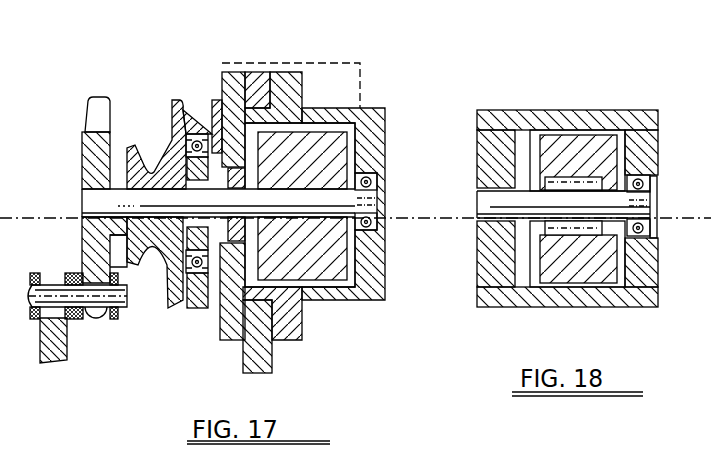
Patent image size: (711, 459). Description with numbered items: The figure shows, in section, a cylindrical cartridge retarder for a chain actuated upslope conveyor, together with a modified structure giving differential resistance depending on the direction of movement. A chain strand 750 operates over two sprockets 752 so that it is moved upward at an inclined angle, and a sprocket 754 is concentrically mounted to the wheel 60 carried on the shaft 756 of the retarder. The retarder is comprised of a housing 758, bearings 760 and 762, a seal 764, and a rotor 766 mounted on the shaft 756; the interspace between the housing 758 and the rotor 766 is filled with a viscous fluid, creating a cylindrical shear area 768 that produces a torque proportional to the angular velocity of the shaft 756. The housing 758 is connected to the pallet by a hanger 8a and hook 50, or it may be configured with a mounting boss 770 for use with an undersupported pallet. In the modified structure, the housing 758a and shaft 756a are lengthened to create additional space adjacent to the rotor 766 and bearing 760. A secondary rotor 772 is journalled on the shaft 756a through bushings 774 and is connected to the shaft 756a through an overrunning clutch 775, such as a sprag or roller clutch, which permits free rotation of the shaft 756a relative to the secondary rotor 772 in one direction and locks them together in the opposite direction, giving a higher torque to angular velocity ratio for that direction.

In FIG. 17, the hanger 8a is at (243, 360).
In FIG. 17, the hook 50 is at (255, 82).
In FIG. 17, the wheel 60 is at (172, 110).
In FIG. 17, the chain strand 750 is at (72, 275).
In FIG. 17, the sprockets 752 is at (62, 352).
In FIG. 17, the sprocket 754 is at (96, 154).
In FIG. 17, the shaft 756 is at (95, 201).
In FIG. 18, the shaft 756a is at (493, 203).
In FIG. 17, the housing 758 is at (363, 303).
In FIG. 18, the housing 758a is at (512, 307).
In FIG. 17, the bearing 760 is at (377, 183).
In FIG. 18, the bearing 760 is at (653, 190).
In FIG. 17, the bearing 762 is at (202, 280).
In FIG. 17, the seal 764 is at (260, 233).
In FIG. 17, the rotor 766 is at (318, 275).
In FIG. 18, the rotor 766 is at (492, 138).
In FIG. 17, the cylindrical shear area 768 is at (313, 132).
In FIG. 17, the mounting boss 770 is at (362, 85).
In FIG. 18, the secondary rotor 772 is at (603, 138).
In FIG. 18, the bushings 774 is at (607, 303).
In FIG. 18, the overrunning clutch 775 is at (565, 230).